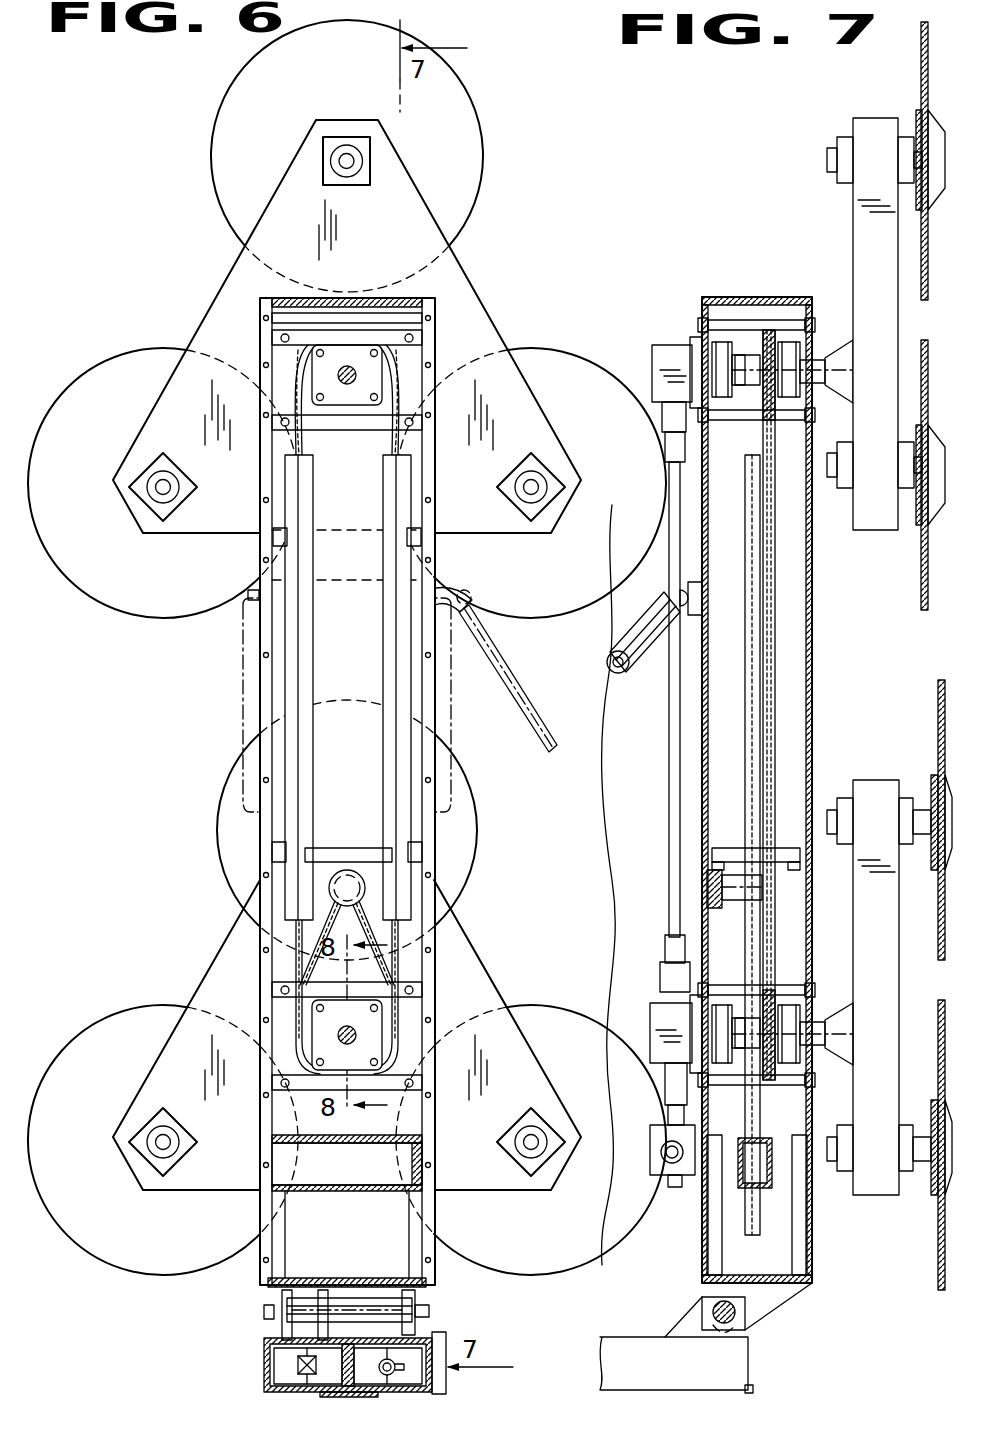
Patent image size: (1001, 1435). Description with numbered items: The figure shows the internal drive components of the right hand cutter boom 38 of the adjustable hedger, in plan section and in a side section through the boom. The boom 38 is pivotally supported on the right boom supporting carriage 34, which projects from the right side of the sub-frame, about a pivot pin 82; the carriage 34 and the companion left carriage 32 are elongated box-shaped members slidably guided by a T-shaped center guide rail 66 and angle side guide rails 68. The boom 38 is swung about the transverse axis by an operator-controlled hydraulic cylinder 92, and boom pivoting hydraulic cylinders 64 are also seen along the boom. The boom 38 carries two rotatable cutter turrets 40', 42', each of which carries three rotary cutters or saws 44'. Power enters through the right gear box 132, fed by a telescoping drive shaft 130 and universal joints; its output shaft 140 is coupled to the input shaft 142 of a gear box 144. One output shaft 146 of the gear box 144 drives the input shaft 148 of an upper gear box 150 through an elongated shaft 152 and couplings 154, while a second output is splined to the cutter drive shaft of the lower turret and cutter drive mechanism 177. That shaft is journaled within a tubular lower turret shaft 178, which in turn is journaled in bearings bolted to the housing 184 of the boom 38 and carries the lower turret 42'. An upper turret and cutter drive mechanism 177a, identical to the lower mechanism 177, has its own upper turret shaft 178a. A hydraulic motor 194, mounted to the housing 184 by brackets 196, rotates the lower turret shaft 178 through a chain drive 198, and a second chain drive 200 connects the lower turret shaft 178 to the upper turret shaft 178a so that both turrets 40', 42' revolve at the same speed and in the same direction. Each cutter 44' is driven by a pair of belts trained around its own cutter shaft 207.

In FIG. 6, the boom supporting carriage 32 is at (380, 1312).
In FIG. 6, the boom supporting carriage 34 is at (292, 1350).
In FIG. 6, the right hand cutter boom 38 is at (255, 833).
In FIG. 7, the right hand cutter boom 38 is at (738, 294).
In FIG. 6, the cutter turret 40' is at (347, 326).
In FIG. 7, the cutter turret 40' is at (856, 324).
In FIG. 6, the cutter turret 42' is at (347, 1035).
In FIG. 7, the cutter turret 42' is at (879, 961).
In FIG. 6, the cutter 44' is at (347, 662).
In FIG. 7, the cutter 44' is at (908, 656).
In FIG. 6, the boom pivoting hydraulic cylinder 64 is at (408, 635).
In FIG. 7, the boom pivoting hydraulic cylinder 64 is at (658, 604).
In FIG. 6, the T-shaped center guide rail 66 is at (343, 1310).
In FIG. 6, the angle side guide rail 68 is at (354, 1366).
In FIG. 7, the angle side guide rail 68 is at (745, 1358).
In FIG. 6, the pivot pin 82 is at (264, 1312).
In FIG. 7, the pivot pin 82 is at (736, 1312).
In FIG. 6, the hydraulic cylinder 92 is at (518, 700).
In FIG. 7, the telescoping drive shaft 130 is at (676, 1148).
In FIG. 7, the right gear box 132 is at (668, 1184).
In FIG. 7, the output shaft 140 is at (684, 1114).
In FIG. 7, the input shaft 142 is at (665, 1075).
In FIG. 7, the gear box 144 is at (660, 1004).
In FIG. 7, the output shaft 146 is at (665, 972).
In FIG. 7, the input shaft 148 is at (664, 432).
In FIG. 7, the upper gear box 150 is at (688, 350).
In FIG. 7, the elongated shaft 152 is at (669, 690).
In FIG. 7, the coupling 154 is at (665, 464).
In FIG. 6, the lower turret and cutter drive mechanism 177 is at (362, 1035).
In FIG. 7, the lower turret and cutter drive mechanism 177 is at (822, 1025).
In FIG. 6, the upper turret and cutter drive mechanism 177a is at (360, 372).
In FIG. 7, the upper turret and cutter drive mechanism 177a is at (774, 343).
In FIG. 7, the tubular lower turret shaft 178 is at (748, 1020).
In FIG. 7, the upper turret shaft 178a is at (752, 390).
In FIG. 7, the housing 184 is at (812, 688).
In FIG. 6, the hydraulic motor 194 is at (345, 880).
In FIG. 7, the hydraulic motor 194 is at (718, 885).
In FIG. 6, the bracket 196 is at (392, 855).
In FIG. 7, the bracket 196 is at (800, 858).
In FIG. 6, the chain drive 198 is at (400, 970).
In FIG. 7, the chain drive 198 is at (777, 906).
In FIG. 6, the second chain drive 200 is at (395, 397).
In FIG. 7, the second chain drive 200 is at (762, 933).
In FIG. 6, the cutter shaft 207 is at (163, 1130).